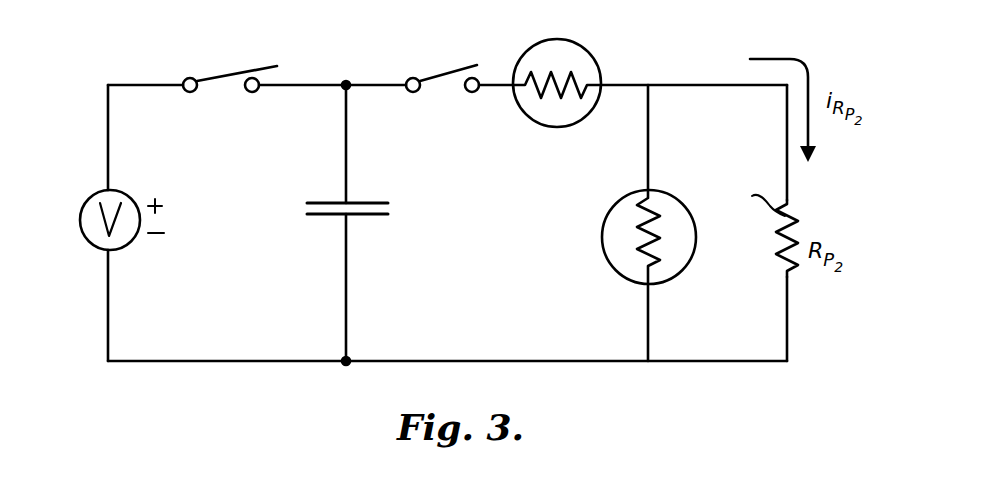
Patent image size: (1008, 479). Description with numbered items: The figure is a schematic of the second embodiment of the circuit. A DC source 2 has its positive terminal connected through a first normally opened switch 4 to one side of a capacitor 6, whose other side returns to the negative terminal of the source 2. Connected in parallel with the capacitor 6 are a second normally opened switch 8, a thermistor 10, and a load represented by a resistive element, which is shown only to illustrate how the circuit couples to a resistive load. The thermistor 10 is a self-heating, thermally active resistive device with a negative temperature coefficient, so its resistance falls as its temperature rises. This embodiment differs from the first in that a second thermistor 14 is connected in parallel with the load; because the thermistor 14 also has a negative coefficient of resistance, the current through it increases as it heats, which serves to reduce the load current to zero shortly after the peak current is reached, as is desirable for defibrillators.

The DC source 2 is at (92, 197).
The first normally opened switch 4 is at (233, 77).
The capacitor 6 is at (303, 210).
The second normally opened switch 8 is at (442, 75).
The thermistor 10 is at (598, 72).
The second thermistor 14 is at (603, 237).